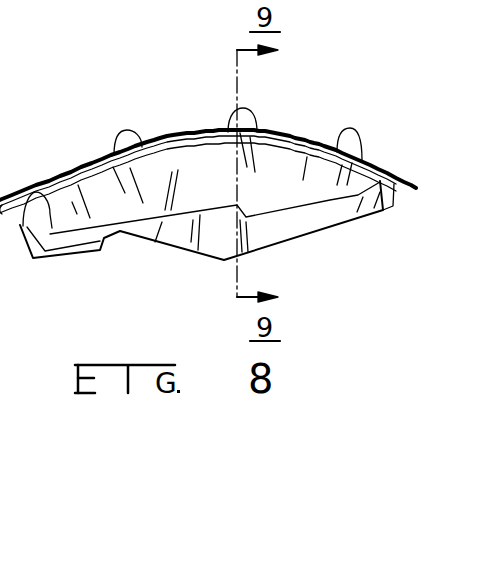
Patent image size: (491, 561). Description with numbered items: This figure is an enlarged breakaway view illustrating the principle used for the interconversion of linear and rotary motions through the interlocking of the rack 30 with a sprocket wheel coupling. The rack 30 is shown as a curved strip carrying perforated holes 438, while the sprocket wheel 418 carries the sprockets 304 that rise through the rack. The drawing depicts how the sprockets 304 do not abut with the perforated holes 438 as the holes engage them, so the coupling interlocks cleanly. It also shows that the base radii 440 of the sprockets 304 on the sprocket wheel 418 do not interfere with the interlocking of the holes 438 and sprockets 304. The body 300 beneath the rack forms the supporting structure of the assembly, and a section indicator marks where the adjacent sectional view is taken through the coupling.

The rack 30 is at (97, 163).
The body 300 is at (326, 229).
The sprockets 304 is at (252, 111).
The sprocket wheel 418 is at (220, 191).
The perforated holes 438 is at (34, 192).
The base radii 440 is at (222, 130).